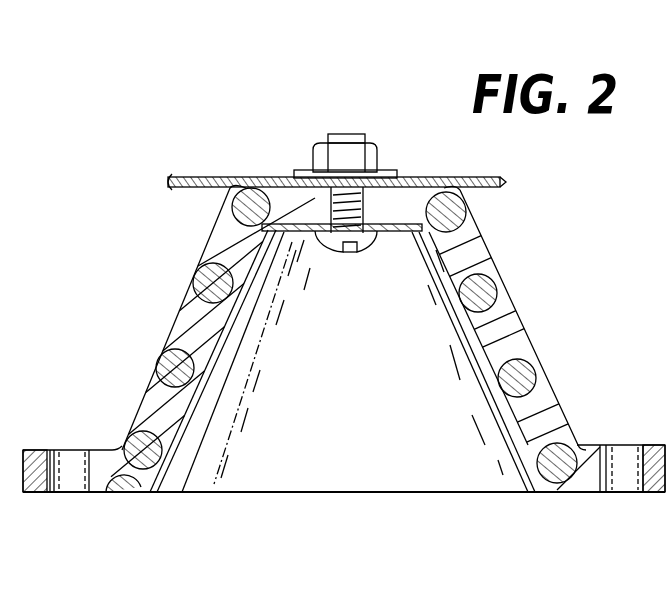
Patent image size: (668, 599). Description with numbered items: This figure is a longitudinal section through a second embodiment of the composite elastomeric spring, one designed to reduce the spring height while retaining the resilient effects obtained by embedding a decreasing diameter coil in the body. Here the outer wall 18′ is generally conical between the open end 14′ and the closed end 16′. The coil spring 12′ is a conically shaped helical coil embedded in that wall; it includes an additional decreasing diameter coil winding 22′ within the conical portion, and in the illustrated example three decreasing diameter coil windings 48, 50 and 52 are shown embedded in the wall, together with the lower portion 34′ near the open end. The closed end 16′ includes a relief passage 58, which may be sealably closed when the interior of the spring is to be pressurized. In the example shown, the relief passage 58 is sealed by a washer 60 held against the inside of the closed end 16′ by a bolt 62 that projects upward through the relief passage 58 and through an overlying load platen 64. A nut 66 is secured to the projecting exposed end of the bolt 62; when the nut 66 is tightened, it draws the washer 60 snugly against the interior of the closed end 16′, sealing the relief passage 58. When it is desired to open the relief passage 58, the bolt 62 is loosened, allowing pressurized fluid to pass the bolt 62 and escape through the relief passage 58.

The coil spring 12′ is at (200, 282).
The open end 14′ is at (300, 478).
The closed end 16′ is at (405, 195).
The outer wall 18′ is at (522, 312).
The decreasing diameter coil winding 22′ is at (455, 212).
The flange 34′ is at (590, 478).
The decreasing diameter coil winding 48 is at (565, 450).
The decreasing diameter coil winding 50 is at (523, 376).
The decreasing diameter coil winding 52 is at (486, 292).
The relief passage 58 is at (323, 245).
The washer 60 is at (400, 240).
The bolt 62 is at (352, 258).
The load platen 64 is at (215, 178).
The nut 66 is at (378, 158).